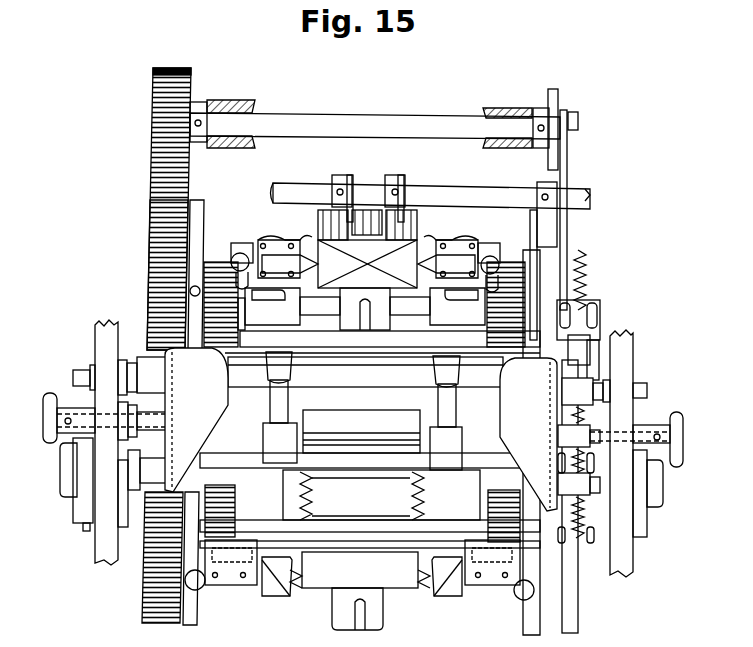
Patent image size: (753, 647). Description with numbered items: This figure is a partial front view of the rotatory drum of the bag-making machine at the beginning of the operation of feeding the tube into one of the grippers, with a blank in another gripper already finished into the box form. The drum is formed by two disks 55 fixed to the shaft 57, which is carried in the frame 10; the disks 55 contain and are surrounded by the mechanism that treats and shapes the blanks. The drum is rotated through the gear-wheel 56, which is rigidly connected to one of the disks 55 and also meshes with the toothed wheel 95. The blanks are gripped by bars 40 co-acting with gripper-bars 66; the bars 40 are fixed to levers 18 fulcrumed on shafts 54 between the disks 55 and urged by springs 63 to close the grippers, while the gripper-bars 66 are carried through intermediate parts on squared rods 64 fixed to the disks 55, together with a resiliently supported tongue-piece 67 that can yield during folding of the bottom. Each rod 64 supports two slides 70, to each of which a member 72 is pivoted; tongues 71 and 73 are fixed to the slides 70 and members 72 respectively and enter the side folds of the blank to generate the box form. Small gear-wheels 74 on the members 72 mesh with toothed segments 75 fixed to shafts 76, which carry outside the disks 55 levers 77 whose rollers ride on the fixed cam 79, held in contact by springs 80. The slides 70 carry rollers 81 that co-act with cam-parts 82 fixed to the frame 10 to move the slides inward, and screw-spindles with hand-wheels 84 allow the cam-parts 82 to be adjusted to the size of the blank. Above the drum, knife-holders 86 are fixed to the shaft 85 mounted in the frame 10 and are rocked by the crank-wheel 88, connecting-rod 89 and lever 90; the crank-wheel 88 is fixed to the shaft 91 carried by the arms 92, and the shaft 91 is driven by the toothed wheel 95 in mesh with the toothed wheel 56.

The frame 10 is at (363, 456).
The levers 18 is at (362, 411).
The bars 40 is at (370, 439).
The shafts 54 is at (365, 372).
The disks 55 is at (362, 413).
The gear-wheel 56 is at (158, 422).
The shaft 57 is at (351, 447).
The springs 63 is at (370, 509).
The squared rods 64 is at (365, 265).
The gripper-bars 66 is at (360, 570).
The tongue-piece 67 is at (362, 459).
The slides 70 is at (361, 309).
The tongues 71 is at (368, 274).
The member 72 is at (362, 573).
The tongues 73 is at (365, 407).
The small gear-wheels 74 is at (366, 243).
The toothed segments 75 is at (364, 392).
The shafts 76 is at (382, 341).
The levers 77 is at (602, 421).
The fixed cam 79 is at (583, 502).
The springs 80 is at (592, 278).
The rollers 81 is at (359, 426).
The cam-parts 82 is at (361, 429).
The hand-wheels 84 is at (363, 430).
The shaft 85 is at (431, 196).
The knife-holders 86 is at (371, 188).
The crank-wheel 88 is at (565, 126).
The connecting-rod 89 is at (574, 210).
The lever 90 is at (539, 250).
The shaft 91 is at (375, 126).
The arms 92 is at (369, 114).
The toothed wheel 95 is at (169, 198).